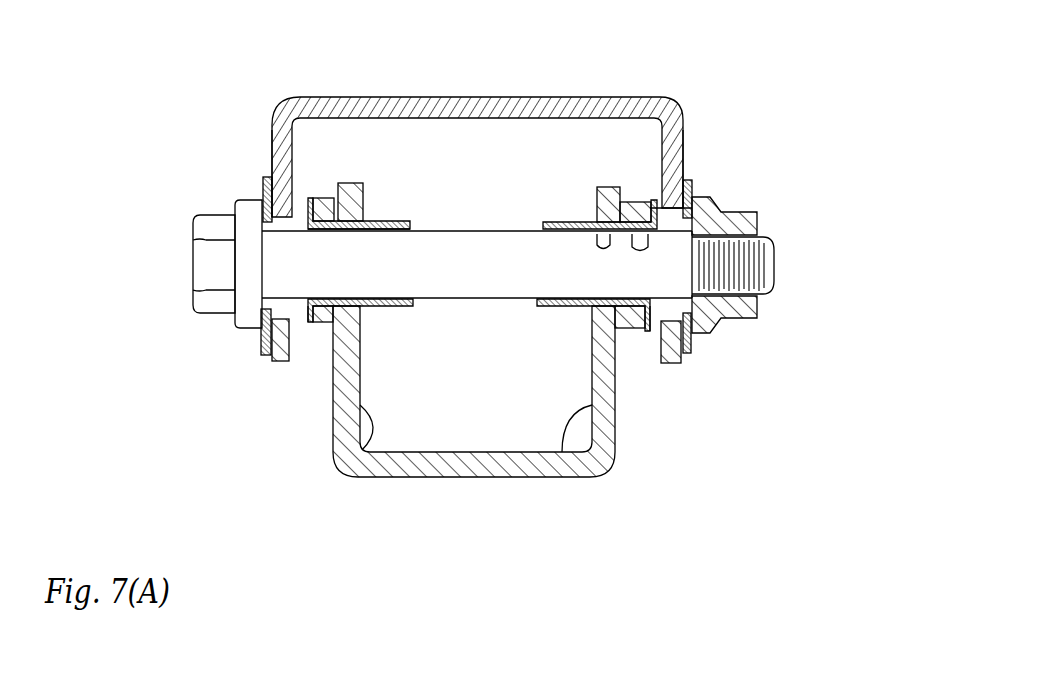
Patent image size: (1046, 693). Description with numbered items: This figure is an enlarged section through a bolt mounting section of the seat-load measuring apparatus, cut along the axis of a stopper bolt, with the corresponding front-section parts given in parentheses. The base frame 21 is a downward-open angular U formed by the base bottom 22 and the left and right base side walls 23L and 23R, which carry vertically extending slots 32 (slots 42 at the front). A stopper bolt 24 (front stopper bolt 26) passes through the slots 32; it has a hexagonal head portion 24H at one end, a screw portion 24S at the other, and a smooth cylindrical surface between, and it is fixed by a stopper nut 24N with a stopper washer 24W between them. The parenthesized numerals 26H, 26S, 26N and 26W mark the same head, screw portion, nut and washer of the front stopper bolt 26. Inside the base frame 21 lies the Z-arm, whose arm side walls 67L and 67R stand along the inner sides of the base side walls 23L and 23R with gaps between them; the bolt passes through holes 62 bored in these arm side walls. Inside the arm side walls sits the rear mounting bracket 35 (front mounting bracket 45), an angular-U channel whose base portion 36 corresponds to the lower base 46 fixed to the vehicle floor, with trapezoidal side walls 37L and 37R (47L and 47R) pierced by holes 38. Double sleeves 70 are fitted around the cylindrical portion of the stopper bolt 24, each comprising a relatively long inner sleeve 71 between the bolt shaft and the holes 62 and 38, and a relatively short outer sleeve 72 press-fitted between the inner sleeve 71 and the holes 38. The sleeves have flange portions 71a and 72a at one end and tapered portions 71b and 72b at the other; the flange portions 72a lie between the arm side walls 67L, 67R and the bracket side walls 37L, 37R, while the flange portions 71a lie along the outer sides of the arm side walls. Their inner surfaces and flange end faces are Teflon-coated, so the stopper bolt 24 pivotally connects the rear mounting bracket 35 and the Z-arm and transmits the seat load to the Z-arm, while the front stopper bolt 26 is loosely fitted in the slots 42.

The base frame 21 is at (478, 109).
The base bottom 22 is at (434, 100).
The left base side wall 23L is at (271, 152).
The right base side wall 23R is at (684, 152).
The stopper bolt 24 is at (500, 365).
The stopper bolt 26 is at (500, 365).
The hexagonal head portion 24H is at (178, 283).
The hexagonal head of pedal shaft 26H is at (208, 267).
The screw portion 24S is at (803, 284).
The threaded portion of pedal shaft 26S is at (776, 270).
The stopper nut 24N is at (786, 289).
The nut 26N is at (730, 322).
The stopper washer 24W is at (465, 303).
The washer 26W is at (262, 334).
The slots 32 is at (459, 395).
The slots 42 is at (279, 362).
The rear mounting bracket 35 is at (477, 480).
The front mounting bracket 45 is at (477, 480).
The bracket base 36 is at (474, 429).
The lower base 46 is at (445, 478).
The trapezoidal side wall 37L is at (380, 500).
The side wall 47L is at (362, 476).
The trapezoidal side wall 37R is at (579, 500).
The side wall 47R is at (579, 500).
The holes 38 is at (597, 187).
The holes 62 is at (657, 199).
The arm side wall 67L is at (311, 324).
The arm side wall 67R is at (651, 332).
The double sleeves 70 is at (479, 281).
The inner sleeve 71 is at (548, 225).
The outer sleeve 72 is at (570, 222).
The flange portion 71a is at (316, 198).
The flange portion 72a is at (348, 183).
The tapered portion 71b is at (412, 224).
The tapered portion 72b is at (362, 227).